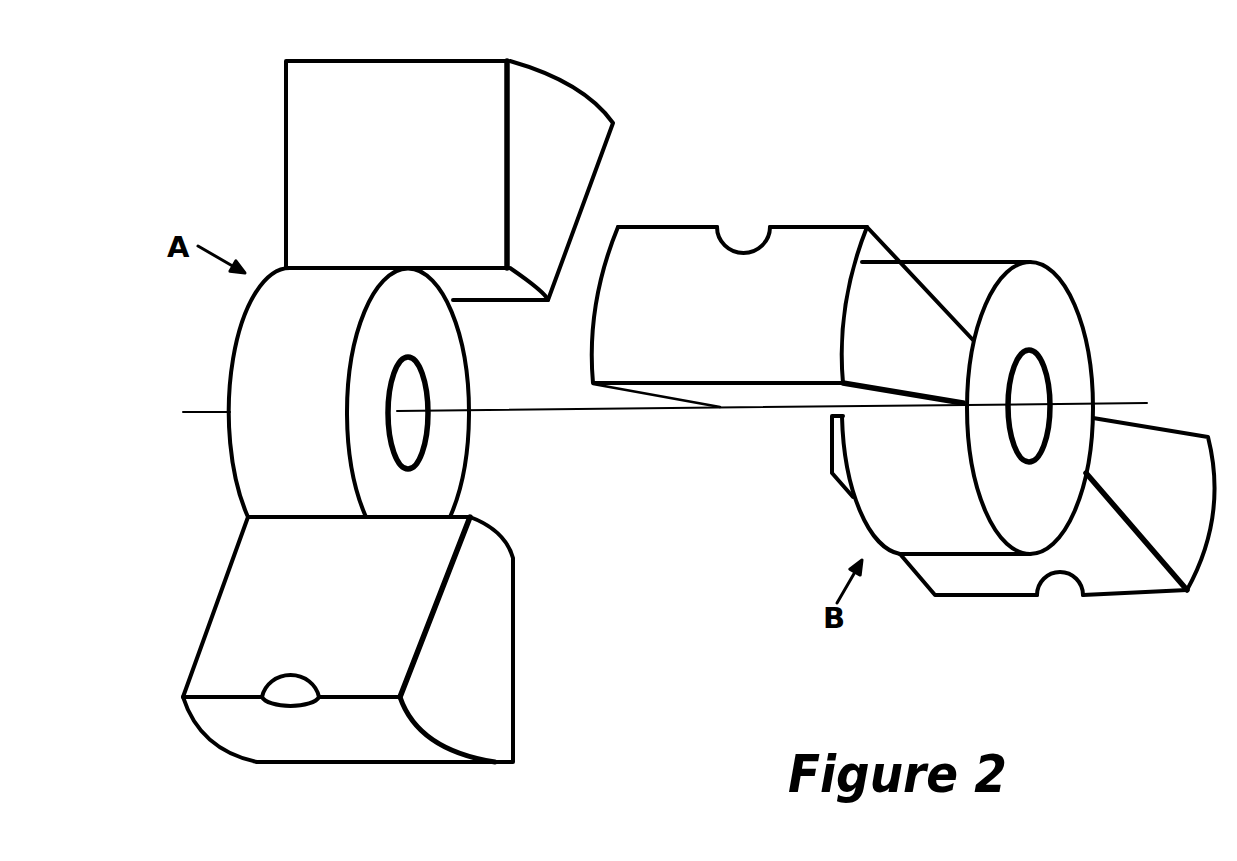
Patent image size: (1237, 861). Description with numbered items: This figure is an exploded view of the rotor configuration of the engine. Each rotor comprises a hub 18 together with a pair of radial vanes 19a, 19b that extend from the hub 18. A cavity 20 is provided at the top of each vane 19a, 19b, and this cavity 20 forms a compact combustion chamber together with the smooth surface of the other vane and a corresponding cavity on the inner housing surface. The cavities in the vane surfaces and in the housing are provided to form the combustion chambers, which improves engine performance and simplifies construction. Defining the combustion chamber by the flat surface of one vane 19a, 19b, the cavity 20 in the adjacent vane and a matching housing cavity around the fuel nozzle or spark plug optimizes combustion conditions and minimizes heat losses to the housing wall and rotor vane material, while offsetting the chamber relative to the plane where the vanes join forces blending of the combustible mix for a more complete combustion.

The hub 18 is at (450, 452).
The radial vane 19a is at (298, 140).
The radial vane 19b is at (875, 260).
The cavity 20 is at (320, 750).